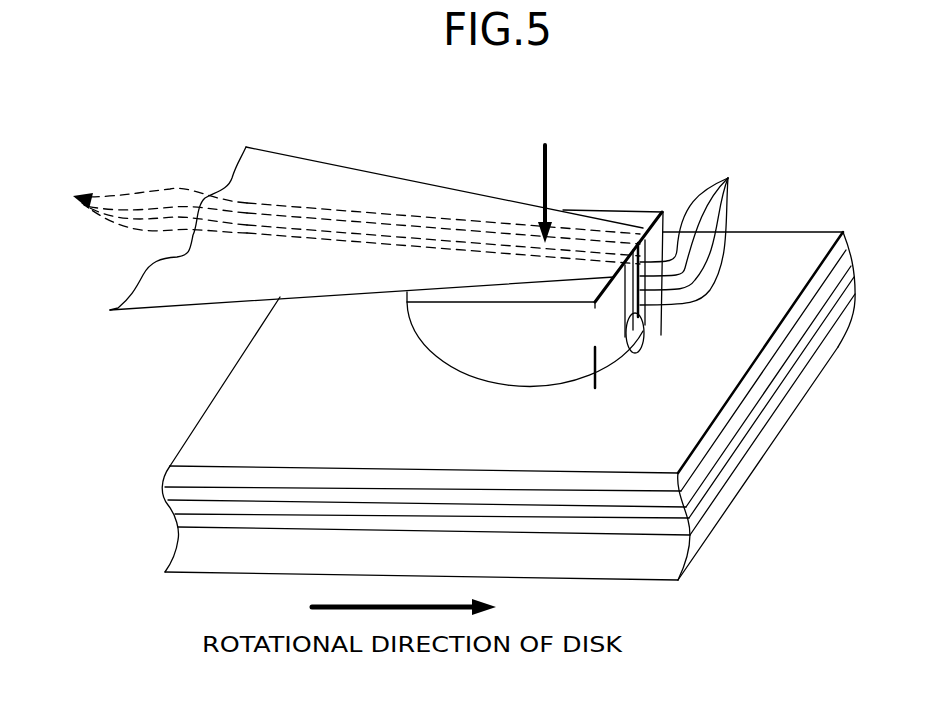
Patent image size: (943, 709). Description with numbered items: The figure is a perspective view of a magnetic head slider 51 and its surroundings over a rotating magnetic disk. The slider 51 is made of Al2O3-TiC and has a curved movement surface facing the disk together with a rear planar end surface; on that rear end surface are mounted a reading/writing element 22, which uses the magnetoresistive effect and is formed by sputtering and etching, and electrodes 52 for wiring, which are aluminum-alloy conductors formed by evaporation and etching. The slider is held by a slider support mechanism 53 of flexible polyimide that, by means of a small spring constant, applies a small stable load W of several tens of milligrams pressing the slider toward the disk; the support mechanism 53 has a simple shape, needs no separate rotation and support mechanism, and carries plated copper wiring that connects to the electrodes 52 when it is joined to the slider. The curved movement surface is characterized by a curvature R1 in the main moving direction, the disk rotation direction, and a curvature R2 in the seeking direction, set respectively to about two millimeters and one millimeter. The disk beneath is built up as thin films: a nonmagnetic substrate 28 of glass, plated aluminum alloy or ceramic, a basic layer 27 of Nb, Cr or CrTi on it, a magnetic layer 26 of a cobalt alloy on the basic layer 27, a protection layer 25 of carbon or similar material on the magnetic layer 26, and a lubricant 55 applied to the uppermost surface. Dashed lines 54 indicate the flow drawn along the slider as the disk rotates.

The slider support mechanism 53 is at (250, 183).
The air flow 54 is at (338, 224).
The load W is at (543, 177).
The magnetic head slider 51 is at (628, 220).
The electrodes 52 is at (695, 244).
The curvature in the main moving direction R1 is at (512, 368).
The curvature in the seeking direction R2 is at (611, 372).
The reading/writing element 22 is at (641, 350).
The lubricant 55 is at (165, 470).
The protection layer 25 is at (165, 490).
The magnetic layer 26 is at (173, 513).
The basic layer 27 is at (178, 522).
The nonmagnetic substrate 28 is at (178, 550).